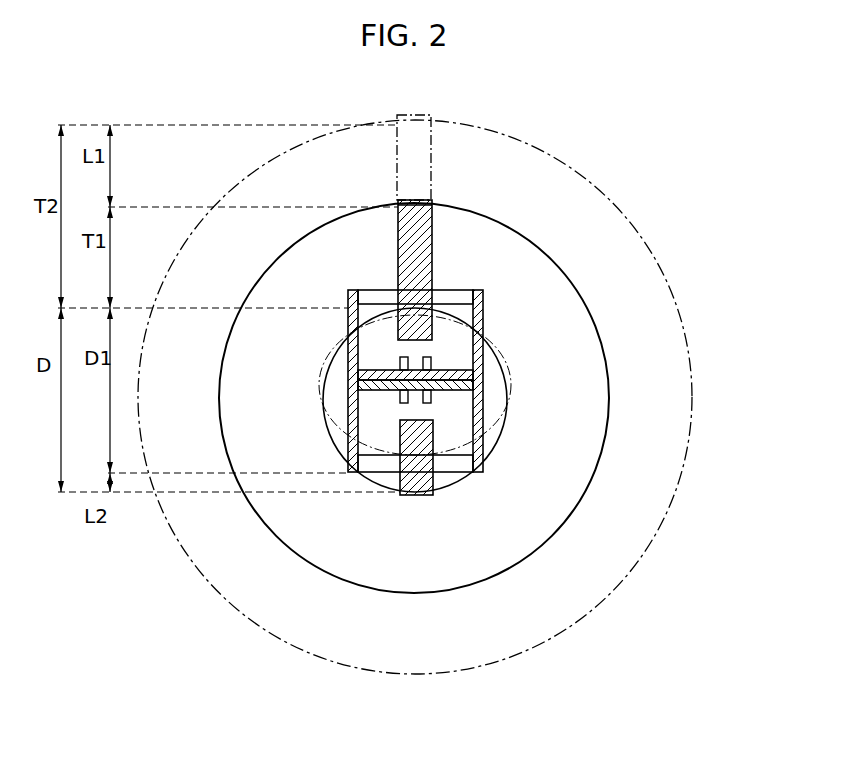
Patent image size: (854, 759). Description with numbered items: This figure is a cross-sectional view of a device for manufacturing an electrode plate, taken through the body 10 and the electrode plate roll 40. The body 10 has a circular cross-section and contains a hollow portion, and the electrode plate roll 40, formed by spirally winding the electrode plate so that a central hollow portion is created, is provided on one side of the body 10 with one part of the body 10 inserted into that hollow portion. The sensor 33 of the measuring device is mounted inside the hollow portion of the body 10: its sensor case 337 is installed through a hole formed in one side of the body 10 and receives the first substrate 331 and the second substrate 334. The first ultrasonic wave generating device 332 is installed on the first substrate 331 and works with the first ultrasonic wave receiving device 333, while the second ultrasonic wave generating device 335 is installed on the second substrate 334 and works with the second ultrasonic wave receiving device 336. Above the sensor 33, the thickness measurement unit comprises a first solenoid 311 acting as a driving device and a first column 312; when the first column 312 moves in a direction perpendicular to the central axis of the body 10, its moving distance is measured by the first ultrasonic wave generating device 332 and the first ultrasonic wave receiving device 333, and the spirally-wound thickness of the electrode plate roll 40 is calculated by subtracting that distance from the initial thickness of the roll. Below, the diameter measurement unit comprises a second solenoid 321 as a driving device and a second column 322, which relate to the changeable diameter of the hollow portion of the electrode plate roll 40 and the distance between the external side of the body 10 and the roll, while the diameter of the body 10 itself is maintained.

The body 10 is at (350, 397).
The electrode plate roll 40 is at (478, 212).
The sensor 33 is at (572, 391).
The first solenoid 311 is at (457, 295).
The first column 312 is at (420, 232).
The second solenoid 321 is at (457, 463).
The second column 322 is at (418, 480).
The first substrate 331 is at (452, 366).
The first ultrasonic wave generating device 332 is at (404, 357).
The first ultrasonic wave receiving device 333 is at (427, 357).
The second substrate 334 is at (427, 403).
The second ultrasonic wave generating device 335 is at (480, 433).
The second ultrasonic wave receiving device 336 is at (404, 403).
The sensor case 337 is at (455, 388).